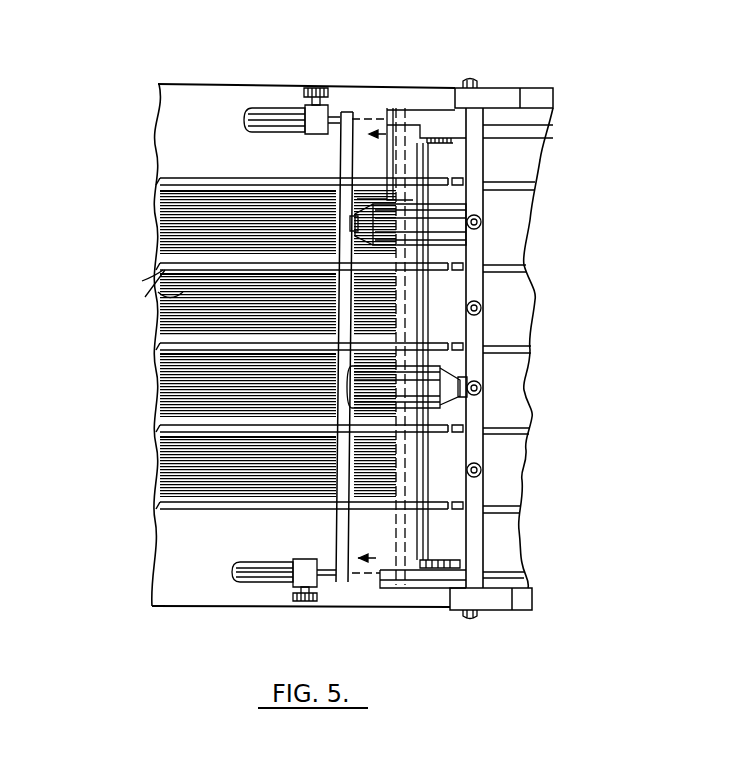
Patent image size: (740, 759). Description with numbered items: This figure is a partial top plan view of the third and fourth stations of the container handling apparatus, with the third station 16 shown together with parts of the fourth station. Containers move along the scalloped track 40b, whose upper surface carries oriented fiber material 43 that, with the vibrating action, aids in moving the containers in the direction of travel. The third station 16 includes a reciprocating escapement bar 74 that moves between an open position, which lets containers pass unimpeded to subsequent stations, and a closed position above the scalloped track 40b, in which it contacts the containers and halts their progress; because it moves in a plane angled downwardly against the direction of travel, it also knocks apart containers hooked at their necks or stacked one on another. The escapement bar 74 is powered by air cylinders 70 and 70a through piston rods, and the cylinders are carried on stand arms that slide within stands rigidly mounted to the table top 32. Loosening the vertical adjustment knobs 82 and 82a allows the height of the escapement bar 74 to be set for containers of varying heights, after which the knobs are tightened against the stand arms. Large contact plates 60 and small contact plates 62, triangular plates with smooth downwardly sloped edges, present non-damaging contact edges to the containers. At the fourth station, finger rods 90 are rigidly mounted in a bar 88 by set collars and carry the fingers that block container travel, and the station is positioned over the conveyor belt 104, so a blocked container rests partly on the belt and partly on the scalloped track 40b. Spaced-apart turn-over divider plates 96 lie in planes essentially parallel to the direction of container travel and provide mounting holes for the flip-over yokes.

The third station 16 is at (259, 74).
The table top 32 is at (187, 146).
The scalloped track 40b is at (142, 281).
The oriented fiber material 43 is at (145, 297).
The large contact plates 60 is at (177, 262).
The small contact plates 62 is at (167, 183).
The air cylinder 70 is at (265, 572).
The air cylinder 70a is at (268, 118).
The escapement bar 74 is at (343, 148).
The vertical adjustment knob 82 is at (303, 602).
The vertical adjustment knob 82a is at (317, 90).
The bar 88 is at (472, 249).
The finger rods 90 is at (481, 222).
The turn-over divider plates 96 is at (533, 268).
The conveyor belt 104 is at (495, 538).